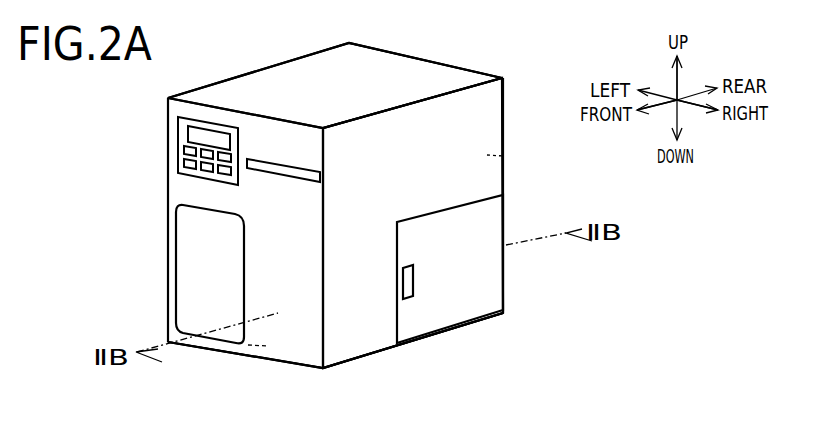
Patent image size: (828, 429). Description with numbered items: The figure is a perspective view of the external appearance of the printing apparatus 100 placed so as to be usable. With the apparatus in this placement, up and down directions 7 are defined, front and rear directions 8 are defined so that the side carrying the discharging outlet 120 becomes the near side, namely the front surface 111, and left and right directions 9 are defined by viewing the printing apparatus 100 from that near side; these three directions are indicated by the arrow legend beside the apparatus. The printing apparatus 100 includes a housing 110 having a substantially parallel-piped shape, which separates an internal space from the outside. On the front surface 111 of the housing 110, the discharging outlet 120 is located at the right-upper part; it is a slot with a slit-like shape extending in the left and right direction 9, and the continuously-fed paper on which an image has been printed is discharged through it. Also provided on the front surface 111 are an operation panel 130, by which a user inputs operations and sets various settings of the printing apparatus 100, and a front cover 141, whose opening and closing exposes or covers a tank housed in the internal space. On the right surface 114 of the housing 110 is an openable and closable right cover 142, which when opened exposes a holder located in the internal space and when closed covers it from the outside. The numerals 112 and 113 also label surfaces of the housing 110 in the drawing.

The printing apparatus 100 is at (459, 343).
The housing 110 is at (415, 72).
The front surface 111 is at (264, 349).
The right side surface 112 is at (505, 125).
The top surface 113 is at (365, 62).
The right surface 114 is at (503, 156).
The discharging outlet 120 is at (281, 180).
The operation panel 130 is at (180, 134).
The front cover 141 is at (190, 282).
The right cover 142 is at (491, 283).
The up and down direction 7 is at (694, 72).
The front and rear direction 8 is at (657, 131).
The left and right direction 9 is at (697, 131).